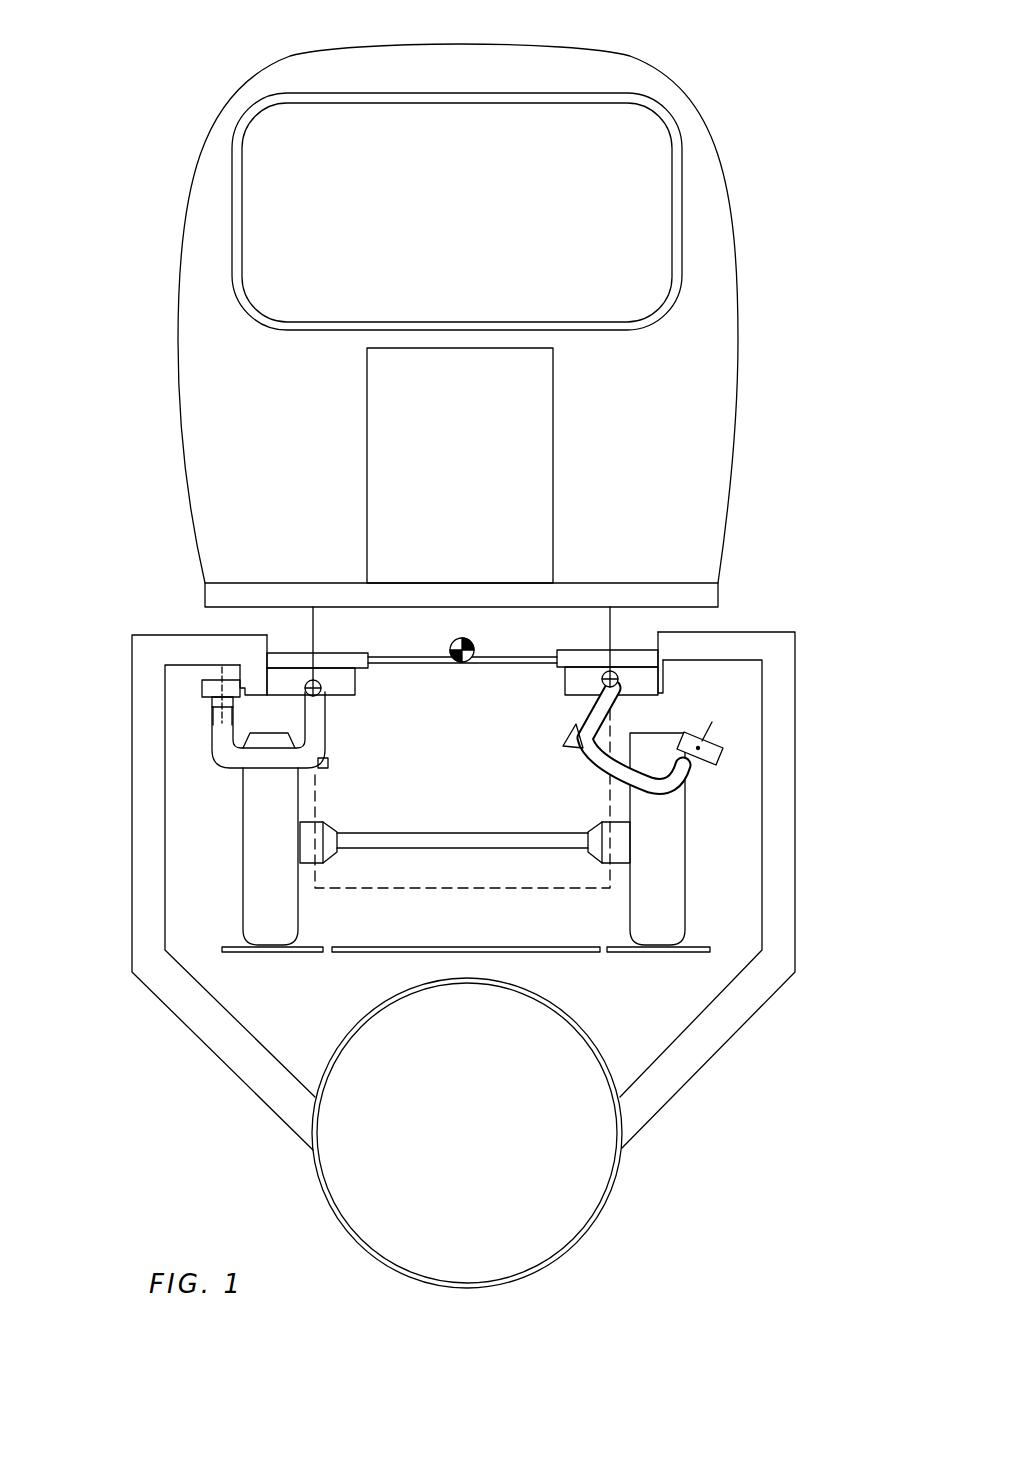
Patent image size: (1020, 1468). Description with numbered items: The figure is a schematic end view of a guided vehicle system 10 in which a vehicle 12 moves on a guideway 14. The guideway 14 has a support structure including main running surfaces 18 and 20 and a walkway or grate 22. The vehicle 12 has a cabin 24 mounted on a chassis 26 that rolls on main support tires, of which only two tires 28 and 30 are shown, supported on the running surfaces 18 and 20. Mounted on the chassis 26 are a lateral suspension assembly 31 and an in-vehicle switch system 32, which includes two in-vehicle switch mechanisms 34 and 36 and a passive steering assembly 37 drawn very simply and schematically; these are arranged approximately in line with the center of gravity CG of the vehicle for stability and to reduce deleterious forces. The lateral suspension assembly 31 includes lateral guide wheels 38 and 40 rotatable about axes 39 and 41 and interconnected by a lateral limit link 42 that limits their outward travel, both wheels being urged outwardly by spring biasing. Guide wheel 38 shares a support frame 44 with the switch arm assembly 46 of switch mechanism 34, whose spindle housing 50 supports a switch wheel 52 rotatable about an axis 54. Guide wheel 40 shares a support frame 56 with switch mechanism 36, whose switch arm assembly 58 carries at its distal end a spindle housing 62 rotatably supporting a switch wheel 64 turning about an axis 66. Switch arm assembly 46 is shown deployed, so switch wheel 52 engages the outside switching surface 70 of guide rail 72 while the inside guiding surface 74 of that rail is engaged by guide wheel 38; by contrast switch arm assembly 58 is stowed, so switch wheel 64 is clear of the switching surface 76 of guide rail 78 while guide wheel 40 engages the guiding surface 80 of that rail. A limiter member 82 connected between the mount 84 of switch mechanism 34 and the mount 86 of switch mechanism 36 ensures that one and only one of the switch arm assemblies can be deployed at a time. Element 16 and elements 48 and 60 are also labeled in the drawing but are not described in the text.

The guided vehicle system 10 is at (102, 114).
The vehicle 12 is at (790, 282).
The guideway 14 is at (830, 935).
The caster wheel 16 is at (738, 1030).
The main running surface 18 is at (296, 955).
The main running surface 20 is at (667, 955).
The walkway or grate 22 is at (378, 955).
The cabin 24 is at (730, 140).
The chassis 26 is at (625, 650).
The main support tire 28 is at (243, 850).
The main support tire 30 is at (685, 850).
The lateral suspension assembly 31 is at (237, 626).
The in-vehicle switch system 32 is at (486, 868).
The in-vehicle switch mechanism 34 is at (322, 792).
The in-vehicle switch mechanism 36 is at (658, 747).
The passive steering assembly 37 is at (413, 850).
The lateral guide wheel 38 is at (347, 660).
The axis 39 is at (315, 633).
The lateral guide wheel 40 is at (568, 650).
The axis 41 is at (610, 630).
The lateral limit link 42 is at (412, 656).
The support frame 44 is at (348, 695).
The switch arm assembly 46 is at (325, 740).
The pivot pin 48 is at (322, 684).
The spindle housing 50 is at (213, 705).
The switch wheel 52 is at (202, 690).
The axis 54 is at (200, 683).
The support frame 56 is at (565, 680).
The switch arm assembly 58 is at (576, 732).
The frame notch 60 is at (640, 697).
The spindle housing 62 is at (700, 782).
The switch wheel 64 is at (723, 748).
The axis 66 is at (712, 735).
The switching surface 70 is at (235, 670).
The guide rail 72 is at (257, 660).
The guiding surface 74 is at (275, 675).
The switching surface 76 is at (795, 632).
The guide rail 78 is at (690, 642).
The guiding surface 80 is at (680, 635).
The limiter member 82 is at (450, 762).
The mount 84 is at (328, 775).
The mount 86 is at (570, 750).
The center of gravity CG is at (470, 640).